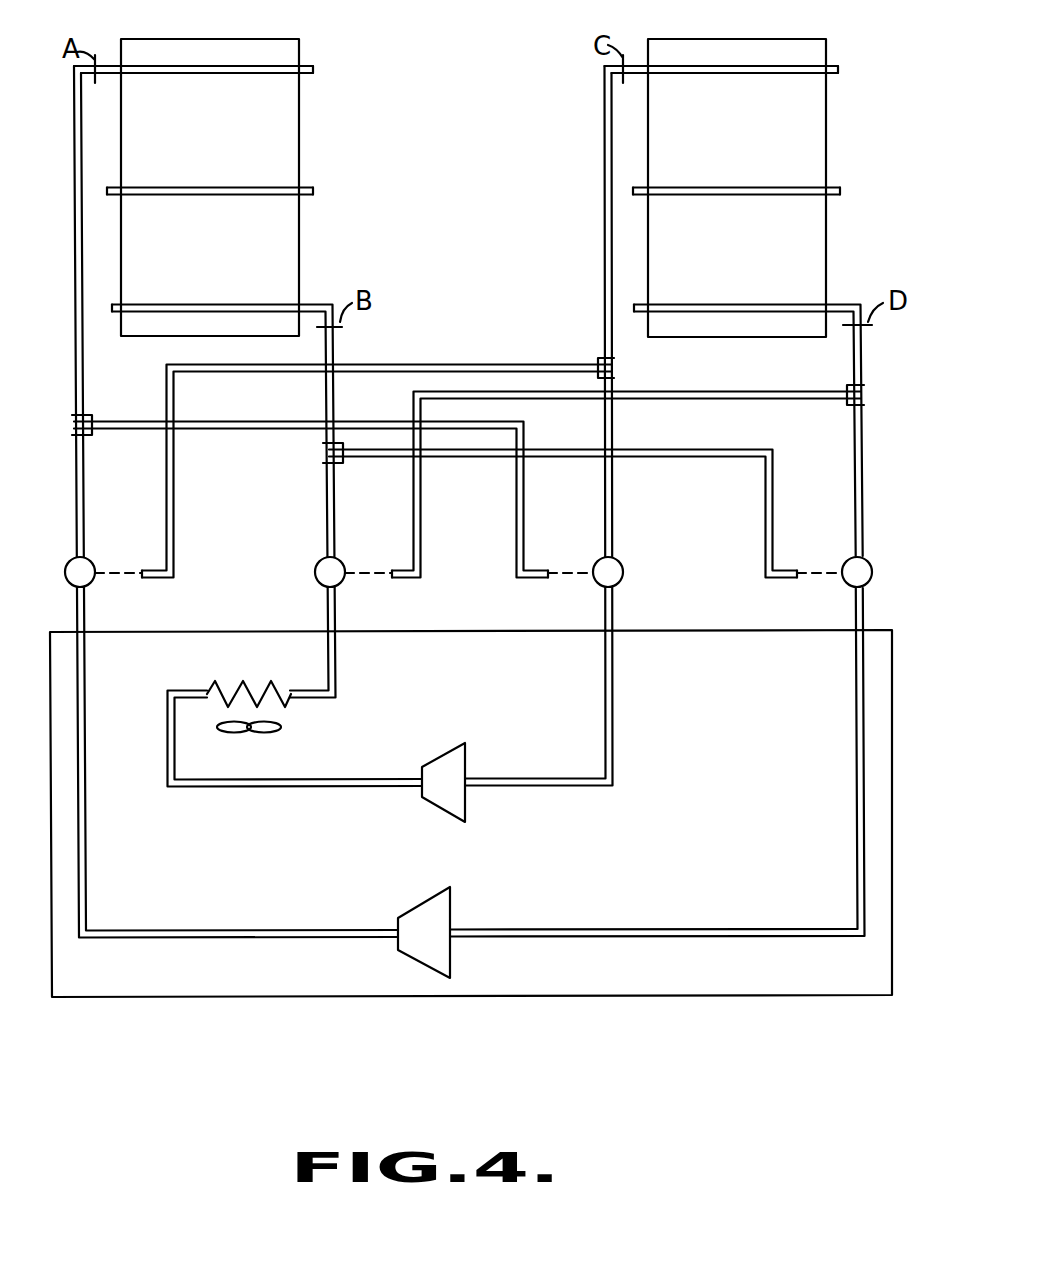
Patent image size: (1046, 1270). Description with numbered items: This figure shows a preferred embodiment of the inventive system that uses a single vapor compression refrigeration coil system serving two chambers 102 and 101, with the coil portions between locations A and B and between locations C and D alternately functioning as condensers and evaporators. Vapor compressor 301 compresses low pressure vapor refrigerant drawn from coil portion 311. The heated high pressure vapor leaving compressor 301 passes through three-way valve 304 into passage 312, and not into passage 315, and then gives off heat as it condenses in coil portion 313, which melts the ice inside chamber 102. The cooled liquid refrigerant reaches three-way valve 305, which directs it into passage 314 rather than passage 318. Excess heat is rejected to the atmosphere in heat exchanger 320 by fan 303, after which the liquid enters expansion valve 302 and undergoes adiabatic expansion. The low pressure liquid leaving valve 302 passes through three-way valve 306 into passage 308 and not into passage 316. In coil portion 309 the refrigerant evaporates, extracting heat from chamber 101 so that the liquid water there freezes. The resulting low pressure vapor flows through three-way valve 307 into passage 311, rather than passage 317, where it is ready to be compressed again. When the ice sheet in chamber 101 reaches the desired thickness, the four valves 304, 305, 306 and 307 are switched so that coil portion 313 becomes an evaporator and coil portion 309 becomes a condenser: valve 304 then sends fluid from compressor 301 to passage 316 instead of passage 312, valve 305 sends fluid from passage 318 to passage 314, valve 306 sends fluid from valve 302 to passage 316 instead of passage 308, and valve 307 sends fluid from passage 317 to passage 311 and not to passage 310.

The chamber 101 is at (756, 177).
The chamber 102 is at (226, 165).
The vapor compressor 301 is at (432, 895).
The expansion valve 302 is at (452, 746).
The fan 303 is at (271, 733).
The three-way valve 304 is at (67, 566).
The three-way valve 305 is at (323, 558).
The three-way valve 306 is at (623, 562).
The three-way valve 307 is at (872, 560).
The passage 308 is at (604, 504).
The coil portion 309 is at (830, 76).
The passage 310 is at (862, 473).
The coil portion 311 is at (857, 757).
The passage 312 is at (74, 390).
The coil portion 313 is at (307, 72).
The passage 314 is at (214, 682).
The passage 315 is at (447, 358).
The passage 316 is at (224, 404).
The passage 317 is at (685, 443).
The passage 318 is at (708, 385).
The heat exchanger 320 is at (98, 997).